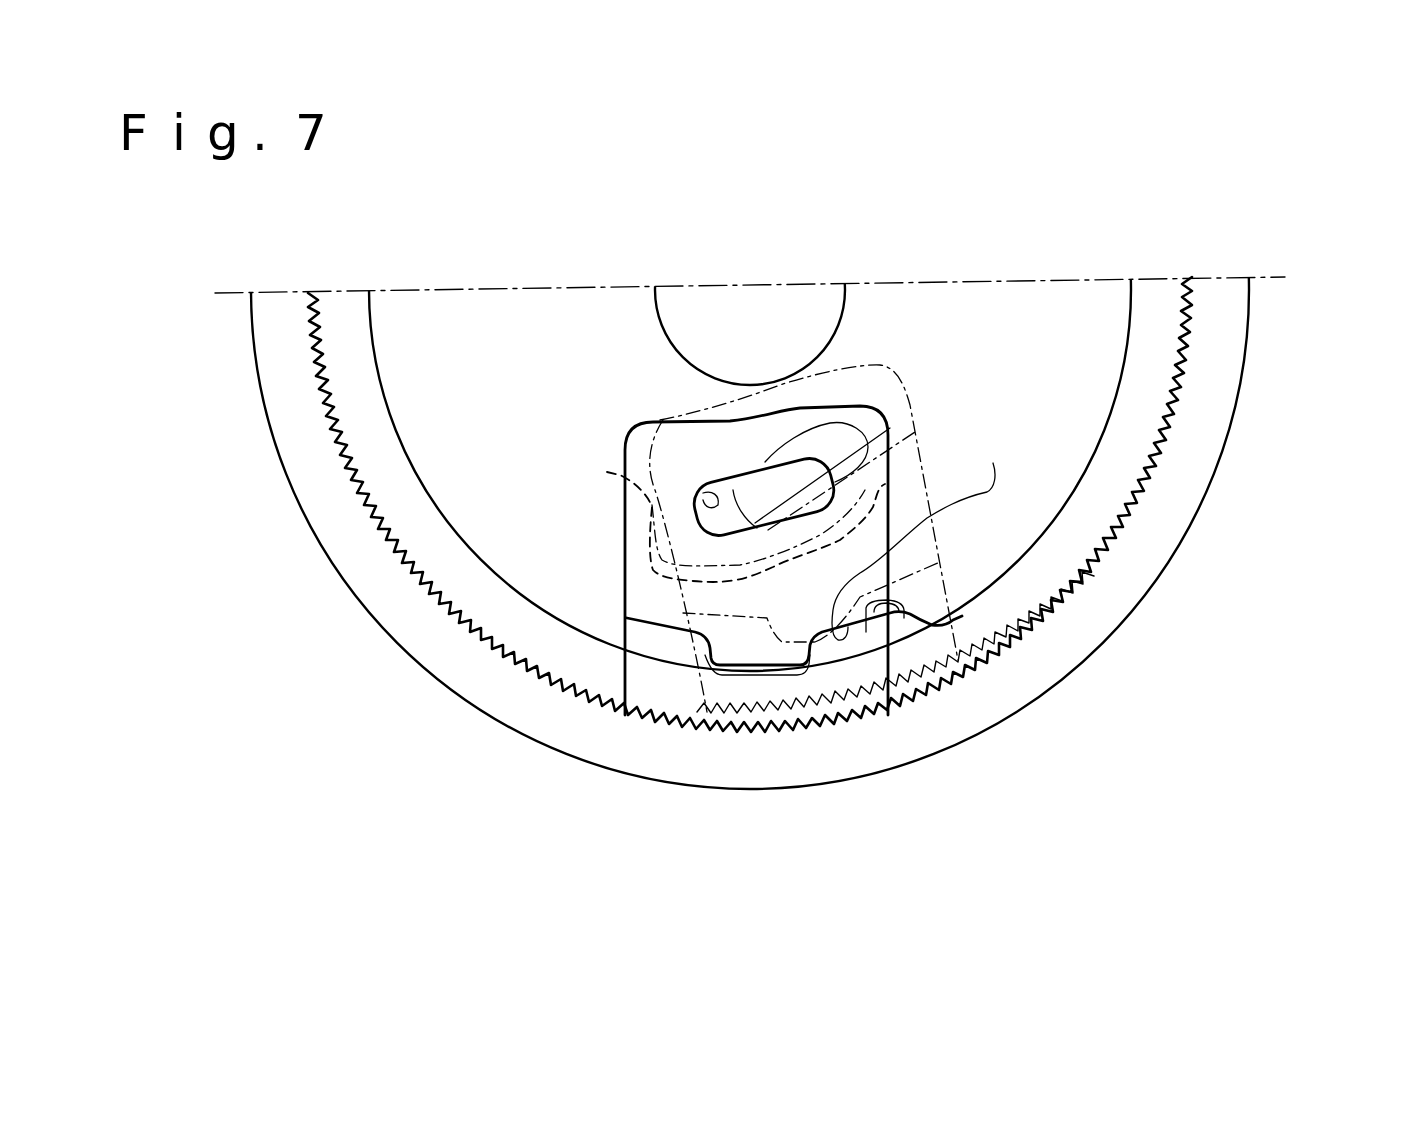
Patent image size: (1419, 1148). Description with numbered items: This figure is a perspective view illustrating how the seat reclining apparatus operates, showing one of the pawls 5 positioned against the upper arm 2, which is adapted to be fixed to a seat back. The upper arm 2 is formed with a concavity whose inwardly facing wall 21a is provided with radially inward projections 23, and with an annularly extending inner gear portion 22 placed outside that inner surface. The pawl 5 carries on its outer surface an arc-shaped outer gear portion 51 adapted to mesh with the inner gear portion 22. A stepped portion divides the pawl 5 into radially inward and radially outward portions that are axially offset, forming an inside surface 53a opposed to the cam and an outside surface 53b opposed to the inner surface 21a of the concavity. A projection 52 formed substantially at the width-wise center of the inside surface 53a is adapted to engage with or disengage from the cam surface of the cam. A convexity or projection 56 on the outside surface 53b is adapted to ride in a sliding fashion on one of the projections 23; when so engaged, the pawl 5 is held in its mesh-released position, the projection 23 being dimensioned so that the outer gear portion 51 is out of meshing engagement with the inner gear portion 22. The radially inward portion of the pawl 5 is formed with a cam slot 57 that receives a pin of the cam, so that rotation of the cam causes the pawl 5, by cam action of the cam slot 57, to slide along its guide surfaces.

The upper arm 2 is at (1211, 493).
The inwardly facing wall 21a is at (1130, 358).
The inner gear portion 22 is at (1027, 620).
The projection 23 is at (897, 617).
The pawl 5 is at (618, 531).
The outer gear portion 51 is at (687, 720).
The projection 52 is at (907, 432).
The inside surface 53a is at (607, 472).
The outside surface 53b is at (1023, 440).
The projection 56 is at (733, 647).
The cam slot 57 is at (712, 507).